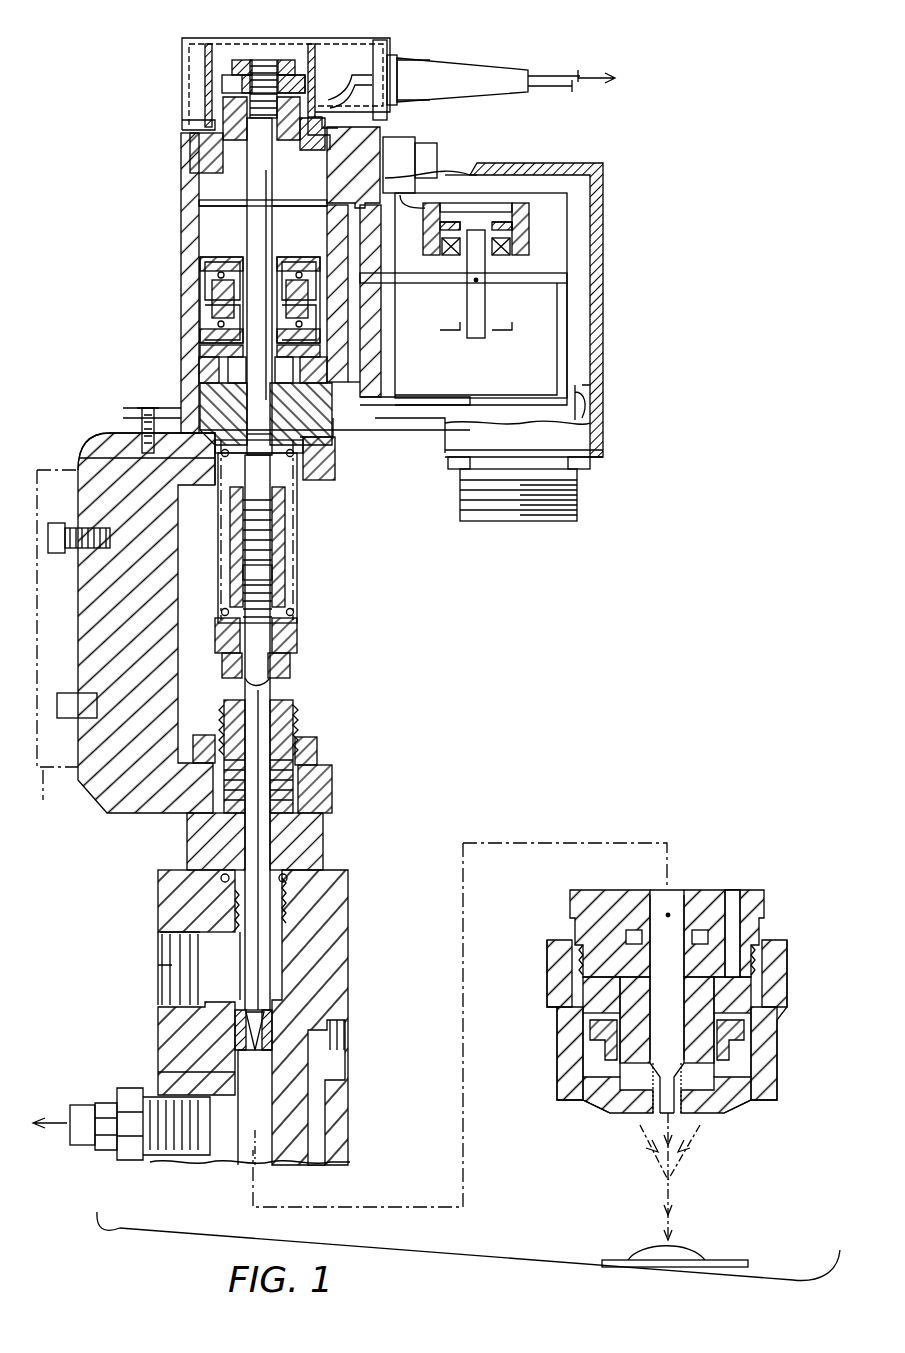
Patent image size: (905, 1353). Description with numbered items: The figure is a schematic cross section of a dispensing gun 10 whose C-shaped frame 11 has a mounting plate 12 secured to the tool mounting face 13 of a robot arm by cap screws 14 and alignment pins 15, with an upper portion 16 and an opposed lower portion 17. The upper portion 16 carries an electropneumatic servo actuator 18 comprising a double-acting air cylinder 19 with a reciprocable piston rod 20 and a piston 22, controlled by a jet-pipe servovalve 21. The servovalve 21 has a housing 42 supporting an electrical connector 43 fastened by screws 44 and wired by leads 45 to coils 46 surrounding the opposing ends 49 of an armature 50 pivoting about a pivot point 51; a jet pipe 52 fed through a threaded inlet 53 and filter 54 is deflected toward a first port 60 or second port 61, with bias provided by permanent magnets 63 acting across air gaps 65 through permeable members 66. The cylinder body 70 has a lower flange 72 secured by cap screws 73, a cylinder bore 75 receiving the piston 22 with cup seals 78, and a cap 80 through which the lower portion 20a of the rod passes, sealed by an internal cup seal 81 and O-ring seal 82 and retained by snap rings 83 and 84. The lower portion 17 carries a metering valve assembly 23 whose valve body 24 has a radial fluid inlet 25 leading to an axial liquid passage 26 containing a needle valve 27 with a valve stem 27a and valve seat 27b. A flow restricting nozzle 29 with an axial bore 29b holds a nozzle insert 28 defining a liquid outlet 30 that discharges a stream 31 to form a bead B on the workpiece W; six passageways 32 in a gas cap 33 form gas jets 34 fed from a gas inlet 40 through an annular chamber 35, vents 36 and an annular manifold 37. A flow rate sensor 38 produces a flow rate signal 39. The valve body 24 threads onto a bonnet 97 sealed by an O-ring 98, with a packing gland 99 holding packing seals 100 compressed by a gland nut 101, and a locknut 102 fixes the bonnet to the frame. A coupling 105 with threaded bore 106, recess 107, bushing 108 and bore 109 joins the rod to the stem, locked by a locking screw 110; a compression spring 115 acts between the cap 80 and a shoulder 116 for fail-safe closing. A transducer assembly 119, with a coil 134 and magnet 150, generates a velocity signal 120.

The dispensing gun 10 is at (660, 570).
The C-shaped frame 11 is at (118, 780).
The mounting plate 12 is at (90, 631).
The tool mounting face 13 is at (57, 646).
The cap screws 14 is at (66, 554).
The alignment pins 15 is at (72, 693).
The upper portion 16 is at (335, 483).
The lower portion 17 is at (333, 774).
The electropneumatic servo actuator 18 is at (635, 178).
The double-acting air cylinder 19 is at (172, 239).
The piston rod 20 is at (258, 240).
The lower portion of piston rod 20a is at (330, 452).
The electropneumatic servovalve 21 is at (575, 233).
The piston 22 is at (215, 300).
The metering valve assembly 23 is at (552, 866).
The valve body 24 is at (352, 946).
The radial fluid inlet 25 is at (180, 968).
The axial liquid passage 26 is at (245, 1068).
The needle valve 27 is at (214, 1027).
The valve stem 27a is at (262, 1008).
The valve seat 27b is at (272, 1028).
The nozzle insert 28 is at (612, 1125).
The flow restricting nozzle 29 is at (580, 995).
The axial bore 29b is at (662, 970).
The liquid outlet 30 is at (690, 1122).
The stream 31 is at (682, 1182).
The passageways 32 is at (700, 1110).
The gas cap 33 is at (792, 1024).
The gas jets 34 is at (695, 1150).
The annular chamber 35 is at (745, 998).
The vents 36 is at (730, 1040).
The annular manifold 37 is at (712, 1100).
The flow rate sensor 38 is at (118, 1150).
The flow rate signal 39 is at (58, 1130).
The gas inlet 40 is at (325, 1058).
The housing 42 is at (565, 163).
The electrical connector 43 is at (520, 505).
The screws 44 is at (588, 468).
The leads 45 is at (580, 410).
The coils 46 is at (497, 254).
The armature ends 49 is at (478, 230).
The armature 50 is at (498, 296).
The pivot point 51 is at (468, 290).
The jet pipe 52 is at (582, 282).
The threaded inlet 53 is at (360, 432).
The filter 54 is at (372, 397).
The first port 60 is at (382, 242).
The second port 61 is at (382, 333).
The permanent magnets 63 is at (498, 204).
The air gaps 65 is at (518, 225).
The magnetically permeable members 66 is at (408, 200).
The cylinder body 70 is at (197, 212).
The lower flange 72 is at (140, 402).
The cap screws 73 is at (148, 408).
The cylinder bore 75 is at (222, 280).
The cup seals 78 is at (206, 325).
The cap 80 is at (239, 538).
The internal cup seal 81 is at (266, 414).
The external O-ring seal 82 is at (200, 440).
The snap ring 83 is at (218, 352).
The snap-ring 84 is at (120, 456).
The bonnet 97 is at (325, 833).
The O-ring seal 98 is at (332, 870).
The packing gland 99 is at (230, 822).
The packing seals 100 is at (296, 798).
The gland nut 101 is at (290, 703).
The locknut 102 is at (315, 745).
The coupling 105 is at (272, 575).
The threaded axial bore 106 is at (275, 542).
The threaded recess 107 is at (298, 628).
The bushing 108 is at (290, 663).
The axial bore 109 is at (245, 682).
The locking screw 110 is at (272, 600).
The compression spring 115 is at (298, 525).
The annular shoulder 116 is at (220, 618).
The transducer assembly 119 is at (452, 70).
The velocity signal 120 is at (612, 72).
The coil 134 is at (212, 148).
The magnet 150 is at (238, 90).
The bead B is at (692, 1254).
The workpiece W is at (742, 1260).